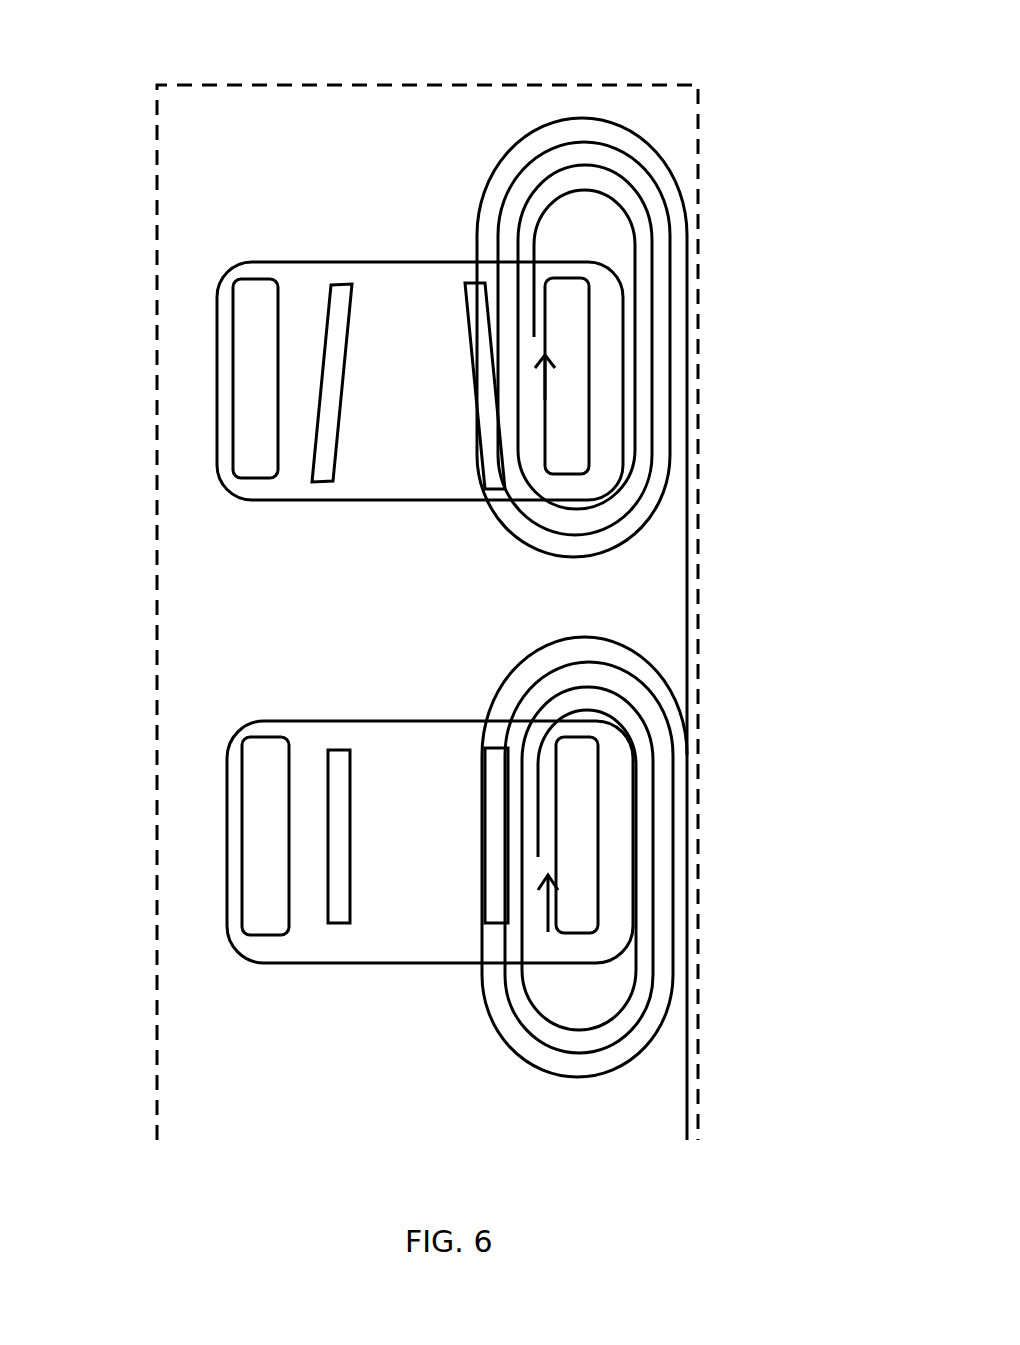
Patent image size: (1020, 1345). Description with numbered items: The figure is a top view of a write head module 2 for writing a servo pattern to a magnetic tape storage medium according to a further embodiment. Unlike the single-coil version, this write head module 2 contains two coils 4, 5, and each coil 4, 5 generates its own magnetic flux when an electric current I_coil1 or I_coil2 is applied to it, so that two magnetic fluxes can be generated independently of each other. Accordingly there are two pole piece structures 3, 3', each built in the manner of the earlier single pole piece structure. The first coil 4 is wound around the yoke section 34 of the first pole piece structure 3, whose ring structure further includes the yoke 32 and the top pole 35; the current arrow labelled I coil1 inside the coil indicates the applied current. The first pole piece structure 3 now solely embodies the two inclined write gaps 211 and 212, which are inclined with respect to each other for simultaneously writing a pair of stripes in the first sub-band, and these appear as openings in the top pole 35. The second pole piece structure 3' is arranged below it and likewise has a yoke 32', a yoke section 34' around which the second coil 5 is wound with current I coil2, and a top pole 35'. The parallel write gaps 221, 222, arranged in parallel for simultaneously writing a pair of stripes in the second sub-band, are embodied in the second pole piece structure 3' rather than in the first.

The write head module 2 is at (155, 552).
The first pole piece structure 3 is at (402, 327).
The second pole piece structure 3' is at (409, 801).
The first coil 4 is at (655, 155).
The second coil 5 is at (660, 673).
The yoke 32 is at (184, 381).
The yoke of second pole piece structure 32' is at (193, 838).
The yoke section 34 is at (655, 447).
The yoke section of second pole piece structure 34' is at (668, 934).
The top pole 35 is at (662, 328).
The top pole of second pole piece structure 35' is at (677, 786).
The first inclined write gap 211 is at (340, 312).
The second inclined write gap 212 is at (478, 312).
The first parallel write gap 221 is at (339, 793).
The second parallel write gap 222 is at (510, 782).